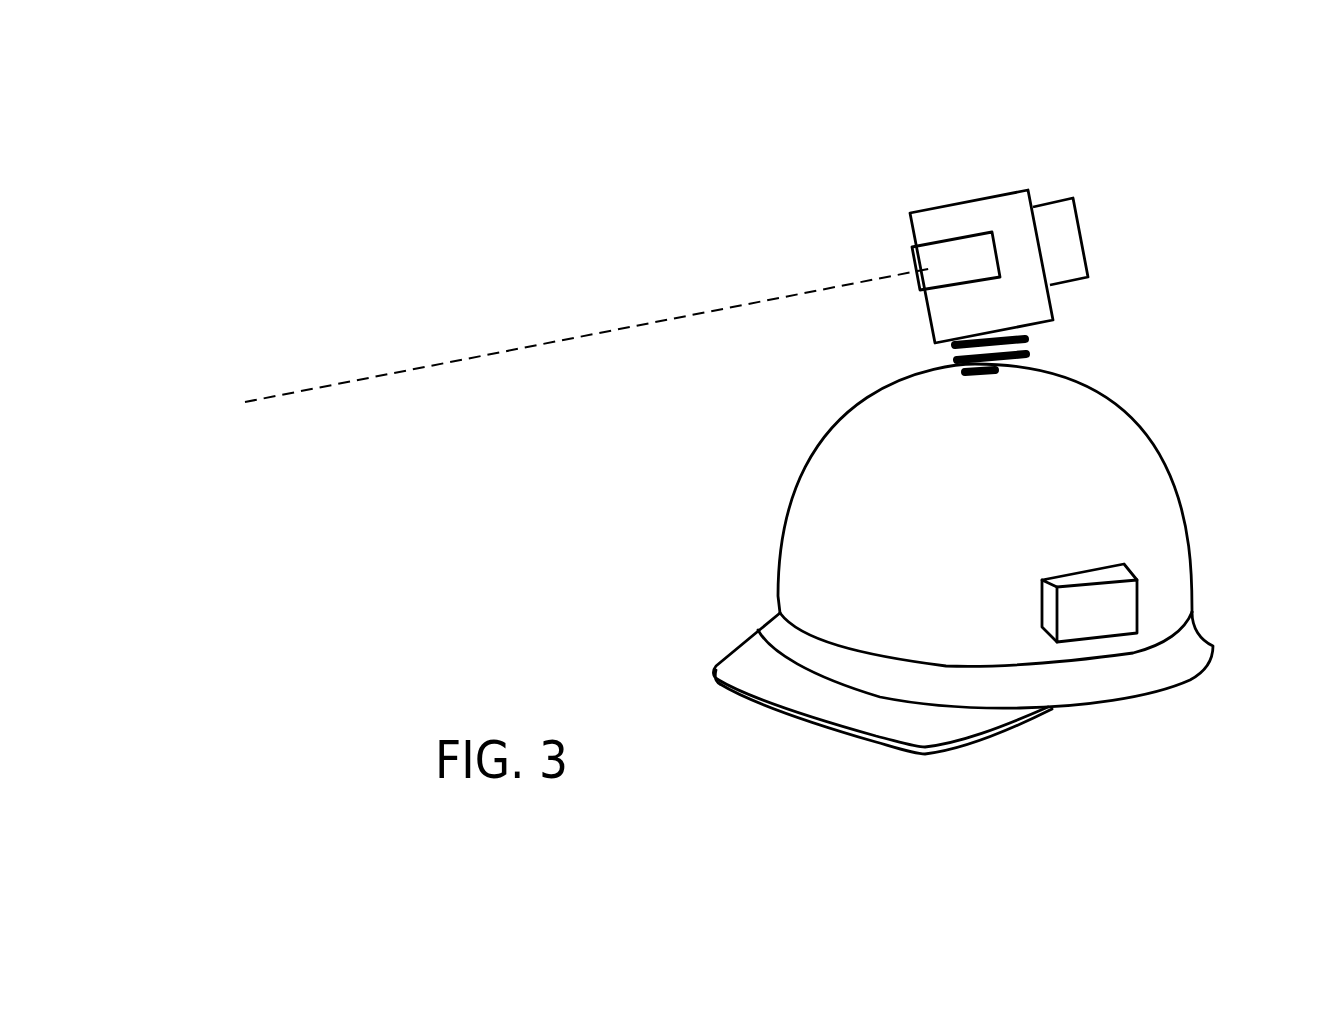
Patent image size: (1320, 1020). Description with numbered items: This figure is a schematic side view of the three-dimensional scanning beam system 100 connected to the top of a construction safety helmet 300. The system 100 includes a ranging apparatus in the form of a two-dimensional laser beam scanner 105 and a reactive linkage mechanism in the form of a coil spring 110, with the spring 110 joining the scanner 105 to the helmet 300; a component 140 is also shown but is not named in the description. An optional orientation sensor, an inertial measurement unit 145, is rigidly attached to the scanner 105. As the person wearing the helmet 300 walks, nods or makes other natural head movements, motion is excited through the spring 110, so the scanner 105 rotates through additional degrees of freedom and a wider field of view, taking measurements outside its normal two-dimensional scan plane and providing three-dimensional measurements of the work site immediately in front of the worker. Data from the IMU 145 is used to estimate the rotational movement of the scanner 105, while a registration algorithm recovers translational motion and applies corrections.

The 3D scanning beam system 100 is at (723, 245).
The 2D laser beam scanner 105 is at (963, 197).
The coil spring 110 is at (1033, 355).
The line of sight / optical axis 140 is at (497, 345).
The inertial measurement unit 145 is at (1085, 240).
The construction safety helmet 300 is at (1137, 433).